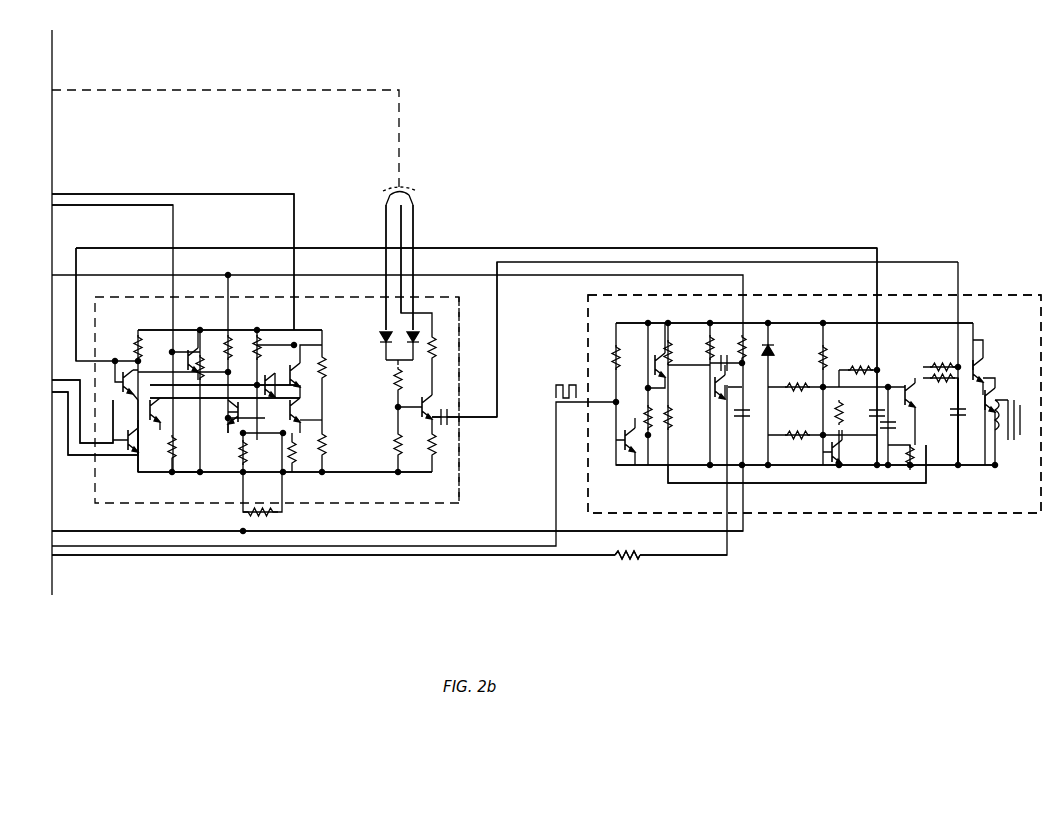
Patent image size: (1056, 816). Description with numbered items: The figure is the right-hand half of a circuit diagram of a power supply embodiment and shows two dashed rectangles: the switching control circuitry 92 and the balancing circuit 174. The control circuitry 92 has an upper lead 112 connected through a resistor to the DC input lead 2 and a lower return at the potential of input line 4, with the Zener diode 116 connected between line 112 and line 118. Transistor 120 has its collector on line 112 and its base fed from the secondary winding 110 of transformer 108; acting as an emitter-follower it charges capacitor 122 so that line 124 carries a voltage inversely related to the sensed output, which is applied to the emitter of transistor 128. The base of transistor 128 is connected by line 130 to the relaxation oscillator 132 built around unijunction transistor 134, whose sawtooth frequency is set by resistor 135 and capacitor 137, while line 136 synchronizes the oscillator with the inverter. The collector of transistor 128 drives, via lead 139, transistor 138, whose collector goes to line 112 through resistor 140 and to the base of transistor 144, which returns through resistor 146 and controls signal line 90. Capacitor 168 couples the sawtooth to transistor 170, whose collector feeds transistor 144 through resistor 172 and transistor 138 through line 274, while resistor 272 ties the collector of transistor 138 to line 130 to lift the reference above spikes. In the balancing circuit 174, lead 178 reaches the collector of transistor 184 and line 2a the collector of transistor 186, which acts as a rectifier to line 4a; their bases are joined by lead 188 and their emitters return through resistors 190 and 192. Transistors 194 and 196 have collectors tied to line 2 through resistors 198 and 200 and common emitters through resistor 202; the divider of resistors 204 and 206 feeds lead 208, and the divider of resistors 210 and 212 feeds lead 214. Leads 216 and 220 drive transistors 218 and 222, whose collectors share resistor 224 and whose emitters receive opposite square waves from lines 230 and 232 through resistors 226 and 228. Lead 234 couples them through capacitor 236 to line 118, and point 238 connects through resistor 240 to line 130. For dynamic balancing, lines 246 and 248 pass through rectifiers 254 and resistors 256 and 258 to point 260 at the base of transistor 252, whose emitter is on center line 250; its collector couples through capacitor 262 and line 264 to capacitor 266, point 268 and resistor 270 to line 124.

The line 2a is at (297, 222).
The DC input lead 2 is at (250, 340).
The input line 4 is at (471, 531).
The line 4a is at (360, 472).
The signal line 90 is at (357, 557).
The control circuitry 92 is at (996, 297).
The transformer 108 is at (1016, 396).
The secondary winding 110 is at (998, 432).
The upper lead 112 is at (886, 328).
The Zener diode 116 is at (780, 361).
The line 118 is at (800, 470).
The transistor 120 is at (990, 375).
The capacitor 122 is at (965, 440).
The line 124 is at (918, 384).
The transistor 128 is at (904, 388).
The line 130 is at (858, 412).
The relaxation oscillator 132 is at (692, 372).
The unijunction transistor 134 is at (712, 389).
The resistor 135 is at (746, 340).
The line 136 is at (694, 556).
The capacitor 137 is at (750, 418).
The transistor 138 is at (836, 452).
The lead 139 is at (912, 452).
The resistor 140 is at (826, 362).
The transistor 144 is at (618, 440).
The resistor 146 is at (616, 355).
The capacitor 168 is at (727, 354).
The transistor 170 is at (655, 368).
The resistor 172 is at (646, 415).
The balancing circuit 174 is at (460, 333).
The lead 178 is at (160, 208).
The transistor 184 is at (190, 371).
The transistor 186 is at (305, 366).
The lead 188 is at (254, 385).
The resistor 190 is at (189, 452).
The resistor 192 is at (305, 452).
The transistor 194 is at (248, 417).
The transistor 196 is at (284, 409).
The resistor 198 is at (240, 352).
The resistor 200 is at (273, 345).
The resistor 202 is at (262, 452).
The resistor 204 is at (186, 362).
The resistor 206 is at (170, 468).
The lead 208 is at (225, 407).
The resistor 210 is at (326, 366).
The resistor 212 is at (326, 436).
The lead 214 is at (305, 425).
The lead 216 is at (241, 388).
The transistor 218 is at (117, 380).
The lead 220 is at (276, 385).
The transistor 222 is at (139, 414).
The resistor 224 is at (136, 345).
The resistor 226 is at (127, 446).
The resistor 228 is at (160, 445).
The line 230 is at (60, 380).
The line 232 is at (58, 392).
The lead 234 is at (76, 328).
The capacitor 236 is at (880, 426).
The point 238 is at (878, 400).
The resistor 240 is at (853, 363).
The line 246 is at (413, 238).
The line 248 is at (386, 236).
The center line 250 is at (401, 270).
The transistor 252 is at (434, 405).
The rectifiers 254 is at (413, 338).
The resistor 256 is at (395, 391).
The resistor 258 is at (415, 452).
The point 260 is at (398, 408).
The capacitor 262 is at (448, 425).
The line 264 is at (498, 340).
The capacitor 266 is at (952, 412).
The point 268 is at (975, 350).
The resistor 270 is at (940, 362).
The resistor 272 is at (785, 435).
The line 274 is at (858, 488).